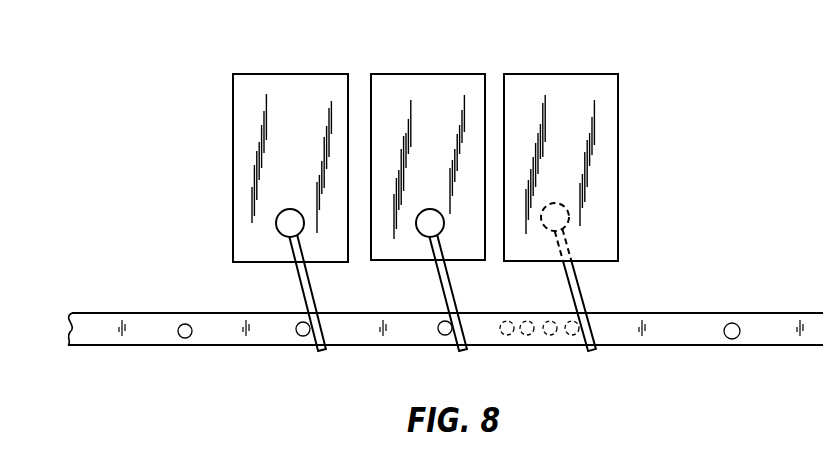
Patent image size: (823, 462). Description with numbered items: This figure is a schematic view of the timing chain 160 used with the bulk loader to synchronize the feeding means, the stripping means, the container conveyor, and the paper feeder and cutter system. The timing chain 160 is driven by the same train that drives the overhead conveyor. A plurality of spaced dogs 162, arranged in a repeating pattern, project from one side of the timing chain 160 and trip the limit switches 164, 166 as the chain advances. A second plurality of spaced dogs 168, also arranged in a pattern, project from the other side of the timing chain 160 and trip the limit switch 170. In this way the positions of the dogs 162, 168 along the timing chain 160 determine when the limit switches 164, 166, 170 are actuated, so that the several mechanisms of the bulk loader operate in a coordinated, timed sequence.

The timing chain 160 is at (412, 346).
The spaced dogs 162 is at (178, 338).
The limit switch 164 is at (266, 74).
The limit switch 166 is at (404, 74).
The spaced dogs 168 is at (509, 336).
The limit switch 170 is at (571, 74).